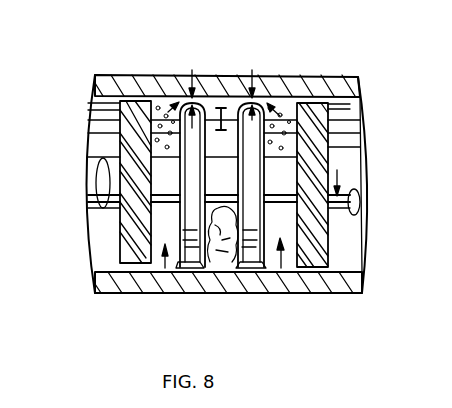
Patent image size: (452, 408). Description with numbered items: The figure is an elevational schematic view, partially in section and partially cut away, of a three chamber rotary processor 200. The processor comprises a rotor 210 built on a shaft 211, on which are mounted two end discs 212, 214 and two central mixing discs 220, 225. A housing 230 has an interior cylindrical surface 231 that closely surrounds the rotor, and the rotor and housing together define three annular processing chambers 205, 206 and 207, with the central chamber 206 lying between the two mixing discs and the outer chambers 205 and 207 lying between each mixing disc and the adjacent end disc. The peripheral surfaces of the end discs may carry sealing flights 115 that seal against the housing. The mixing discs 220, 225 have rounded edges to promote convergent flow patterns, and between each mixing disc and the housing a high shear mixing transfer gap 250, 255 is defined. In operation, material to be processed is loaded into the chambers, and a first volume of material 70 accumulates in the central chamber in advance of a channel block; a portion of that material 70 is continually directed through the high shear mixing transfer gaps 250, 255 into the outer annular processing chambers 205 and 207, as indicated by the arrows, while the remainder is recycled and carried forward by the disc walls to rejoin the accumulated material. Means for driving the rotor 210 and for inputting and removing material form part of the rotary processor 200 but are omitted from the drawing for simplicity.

The three chamber rotary processor 200 is at (333, 52).
The housing 230 is at (347, 78).
The interior cylindrical surface 231 is at (353, 272).
The end disc 212 is at (120, 243).
The rotor 210 is at (346, 219).
The end disc 214 is at (335, 130).
The shaft 211 is at (330, 163).
The sealing flights 115 is at (123, 120).
The high shear mixing transfer gap 250 is at (209, 72).
The high shear mixing transfer gap 255 is at (277, 77).
The annular processing chamber 206 is at (224, 79).
The central mixing disc 220 is at (195, 272).
The central mixing disc 225 is at (257, 270).
The first volume of material 70 is at (222, 250).
The annular processing chamber 205 is at (165, 270).
The annular processing chamber 207 is at (283, 270).